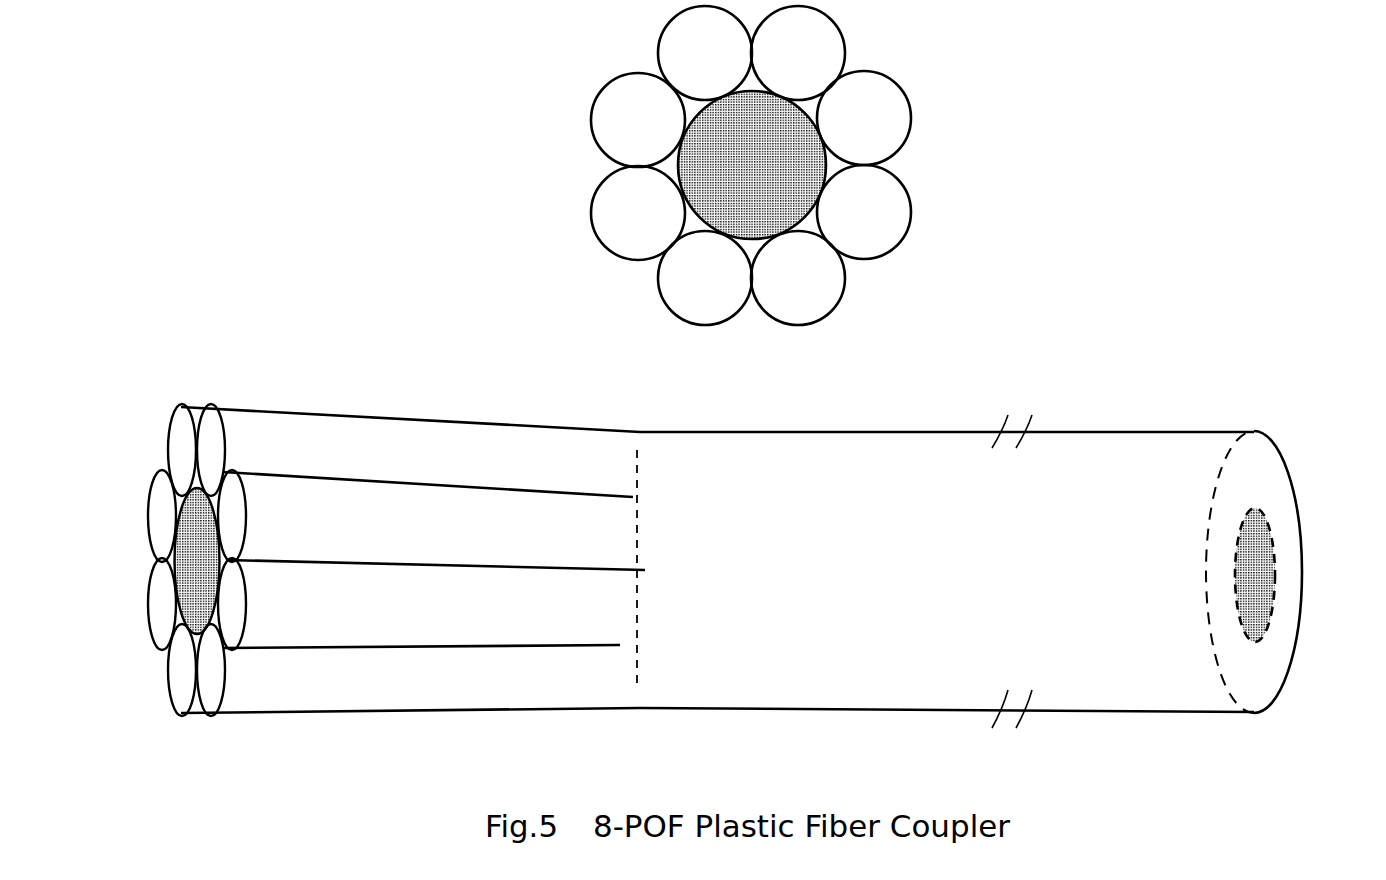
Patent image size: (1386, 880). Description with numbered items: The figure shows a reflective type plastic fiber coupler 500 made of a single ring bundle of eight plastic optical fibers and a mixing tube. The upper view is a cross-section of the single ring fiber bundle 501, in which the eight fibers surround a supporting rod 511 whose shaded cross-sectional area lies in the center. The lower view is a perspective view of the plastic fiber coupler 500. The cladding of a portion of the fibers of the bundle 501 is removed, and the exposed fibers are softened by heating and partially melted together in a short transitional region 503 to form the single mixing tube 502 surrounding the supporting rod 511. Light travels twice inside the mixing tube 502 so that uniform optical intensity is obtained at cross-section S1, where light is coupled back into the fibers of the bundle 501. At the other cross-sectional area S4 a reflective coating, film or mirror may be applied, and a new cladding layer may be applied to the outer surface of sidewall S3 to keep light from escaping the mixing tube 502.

The reflective type plastic fiber coupler 500 is at (512, 295).
The single ring fiber bundle 501 is at (592, 15).
The mixing tube 502 is at (962, 591).
The transitional region 503 is at (635, 395).
The supporting rod 511 is at (780, 177).
The cross-section S1 is at (635, 757).
The outer surface of sidewall S3 is at (936, 658).
The cross-sectional area S4 is at (1256, 670).